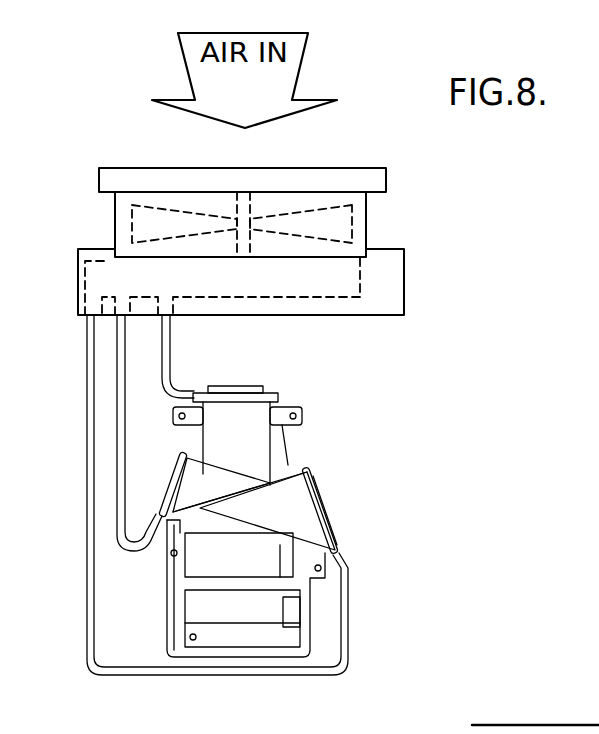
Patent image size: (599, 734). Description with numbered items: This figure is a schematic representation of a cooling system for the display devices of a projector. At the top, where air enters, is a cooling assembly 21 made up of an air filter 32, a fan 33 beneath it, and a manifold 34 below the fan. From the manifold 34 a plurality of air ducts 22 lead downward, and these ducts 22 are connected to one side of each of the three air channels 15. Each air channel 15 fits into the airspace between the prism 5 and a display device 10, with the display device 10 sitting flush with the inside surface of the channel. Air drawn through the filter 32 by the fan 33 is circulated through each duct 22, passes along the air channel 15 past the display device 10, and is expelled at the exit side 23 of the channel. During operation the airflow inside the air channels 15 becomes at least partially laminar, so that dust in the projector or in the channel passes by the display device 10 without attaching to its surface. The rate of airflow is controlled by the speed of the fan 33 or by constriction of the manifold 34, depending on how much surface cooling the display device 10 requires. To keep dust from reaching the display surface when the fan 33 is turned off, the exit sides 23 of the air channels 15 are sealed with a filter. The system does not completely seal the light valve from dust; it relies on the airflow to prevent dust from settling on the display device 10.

The prism 5 is at (287, 458).
The display device 10 is at (323, 490).
The air channel 15 is at (335, 534).
The cooling assembly 21 is at (248, 234).
The air ducts 22 is at (72, 342).
The exit side 23 is at (160, 441).
The air filter 32 is at (386, 184).
The fan 33 is at (366, 222).
The manifold 34 is at (404, 278).